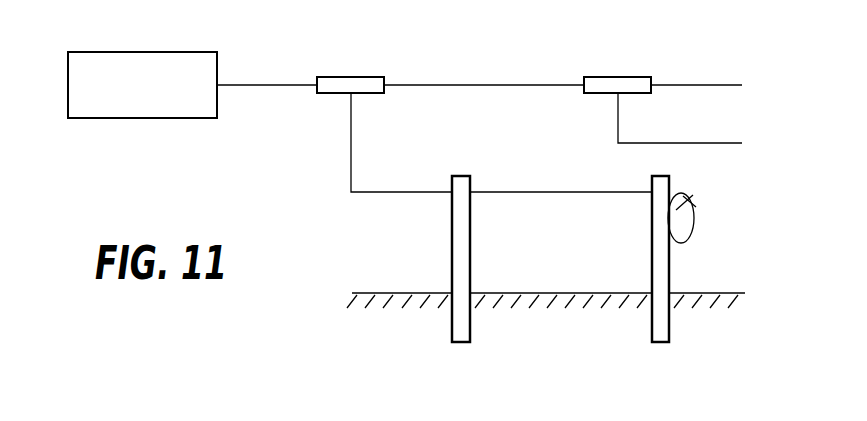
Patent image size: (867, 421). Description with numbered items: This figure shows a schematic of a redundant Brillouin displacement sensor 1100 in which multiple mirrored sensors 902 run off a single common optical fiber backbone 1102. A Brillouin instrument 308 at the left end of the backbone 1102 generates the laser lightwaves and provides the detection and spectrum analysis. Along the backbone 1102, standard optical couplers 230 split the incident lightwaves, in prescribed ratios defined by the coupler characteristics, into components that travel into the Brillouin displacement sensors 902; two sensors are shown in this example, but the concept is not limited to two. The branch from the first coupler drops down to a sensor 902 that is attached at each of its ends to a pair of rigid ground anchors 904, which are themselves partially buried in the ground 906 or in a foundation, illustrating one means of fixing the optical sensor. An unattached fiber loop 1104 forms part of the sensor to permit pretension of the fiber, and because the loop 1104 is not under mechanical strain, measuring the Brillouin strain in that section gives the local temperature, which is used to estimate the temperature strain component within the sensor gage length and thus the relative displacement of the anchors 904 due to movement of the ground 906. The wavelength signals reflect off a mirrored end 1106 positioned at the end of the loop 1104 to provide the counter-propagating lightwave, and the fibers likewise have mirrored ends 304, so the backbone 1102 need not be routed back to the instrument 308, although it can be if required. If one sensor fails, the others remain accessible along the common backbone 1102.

The Brillouin instrument 308 is at (82, 52).
The optical fiber backbone 1102 is at (276, 85).
The optical coupler 230 is at (375, 77).
The mirrored end 304 is at (727, 143).
The mirrored sensor 902 is at (350, 163).
The ground anchor 904 is at (451, 182).
The ground 906 is at (558, 297).
The unattached fiber loop 1104 is at (694, 240).
The mirrored end 1106 is at (700, 203).
The sensor 1100 is at (155, 167).